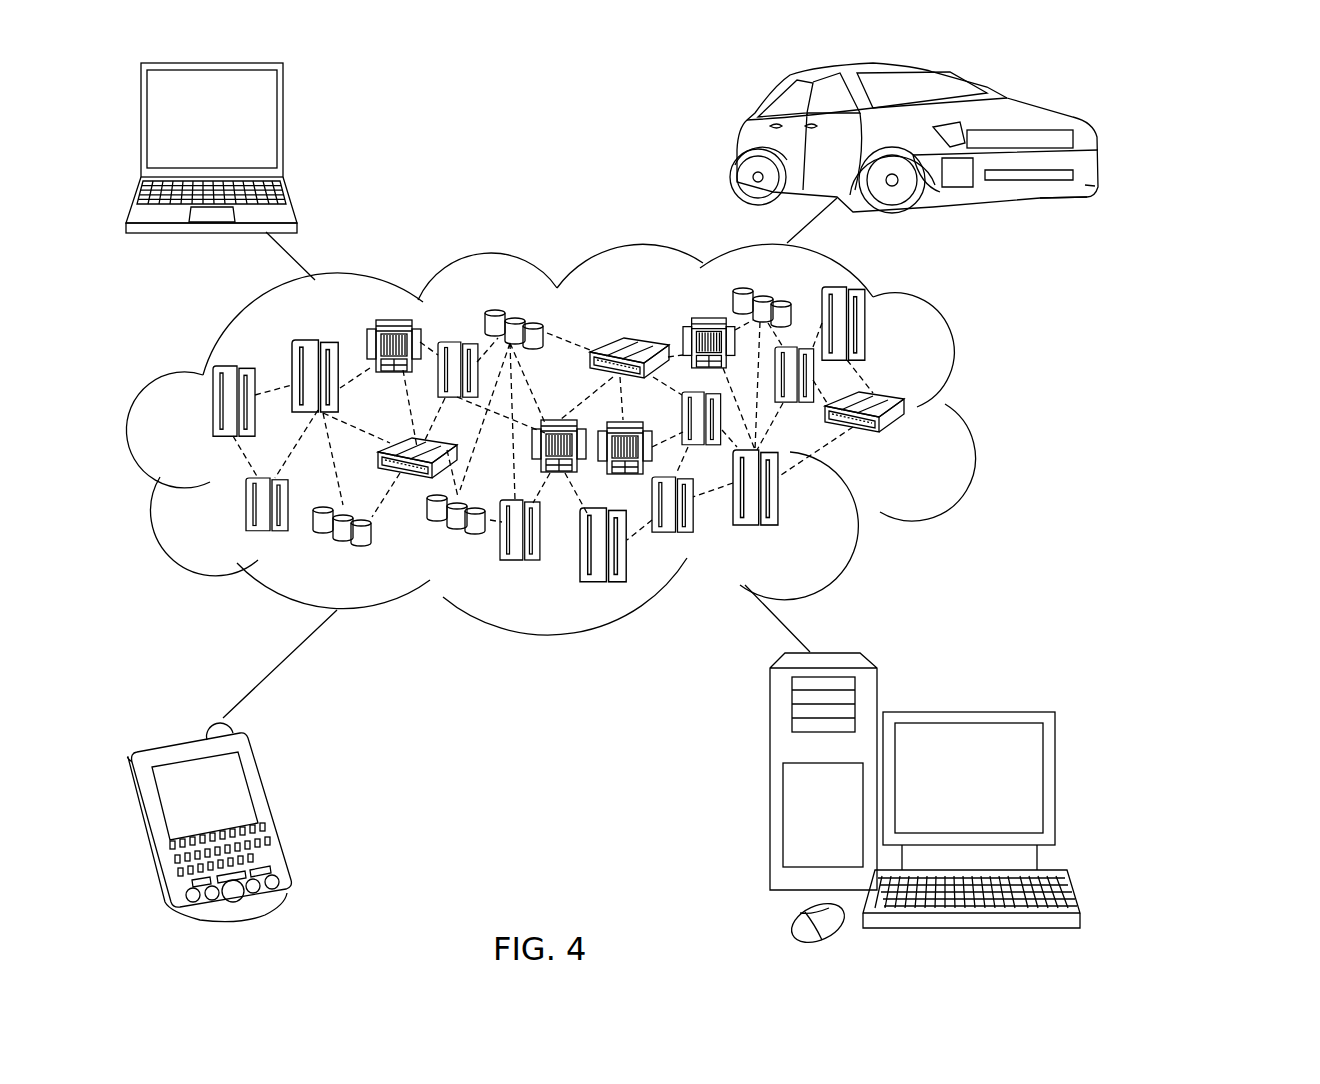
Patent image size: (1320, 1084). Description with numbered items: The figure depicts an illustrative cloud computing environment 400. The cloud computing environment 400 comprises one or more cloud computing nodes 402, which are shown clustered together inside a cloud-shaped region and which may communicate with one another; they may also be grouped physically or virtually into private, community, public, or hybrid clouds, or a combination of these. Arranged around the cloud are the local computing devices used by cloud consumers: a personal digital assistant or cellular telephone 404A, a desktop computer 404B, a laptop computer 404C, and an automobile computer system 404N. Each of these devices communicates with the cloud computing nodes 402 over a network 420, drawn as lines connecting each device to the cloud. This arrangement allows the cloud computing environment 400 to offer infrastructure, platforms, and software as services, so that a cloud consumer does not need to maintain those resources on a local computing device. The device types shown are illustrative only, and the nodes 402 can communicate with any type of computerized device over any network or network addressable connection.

The cloud computing environment 400 is at (1132, 87).
The cloud computing nodes 402 is at (905, 435).
The network 420 is at (966, 411).
The personal digital assistant (PDA) or cellular telephone 404A is at (273, 810).
The desktop computer 404B is at (967, 712).
The laptop computer 404C is at (283, 126).
The automobile computer system 404N is at (740, 140).